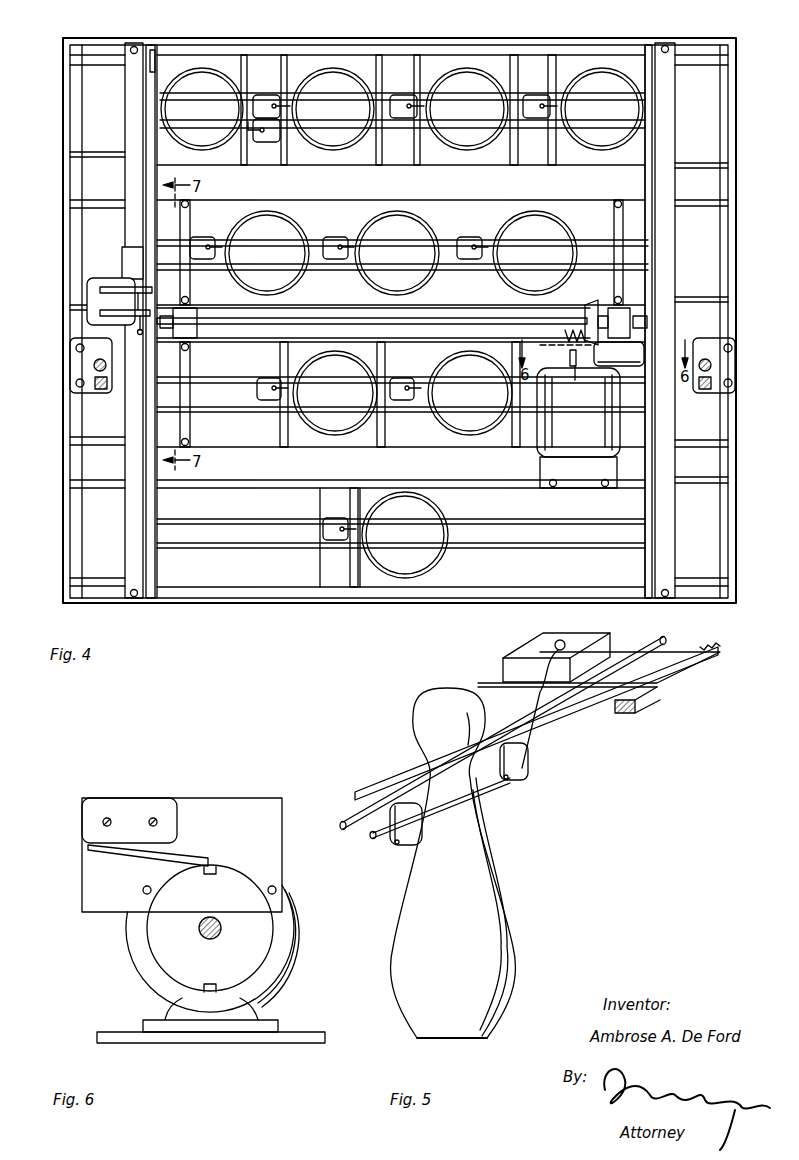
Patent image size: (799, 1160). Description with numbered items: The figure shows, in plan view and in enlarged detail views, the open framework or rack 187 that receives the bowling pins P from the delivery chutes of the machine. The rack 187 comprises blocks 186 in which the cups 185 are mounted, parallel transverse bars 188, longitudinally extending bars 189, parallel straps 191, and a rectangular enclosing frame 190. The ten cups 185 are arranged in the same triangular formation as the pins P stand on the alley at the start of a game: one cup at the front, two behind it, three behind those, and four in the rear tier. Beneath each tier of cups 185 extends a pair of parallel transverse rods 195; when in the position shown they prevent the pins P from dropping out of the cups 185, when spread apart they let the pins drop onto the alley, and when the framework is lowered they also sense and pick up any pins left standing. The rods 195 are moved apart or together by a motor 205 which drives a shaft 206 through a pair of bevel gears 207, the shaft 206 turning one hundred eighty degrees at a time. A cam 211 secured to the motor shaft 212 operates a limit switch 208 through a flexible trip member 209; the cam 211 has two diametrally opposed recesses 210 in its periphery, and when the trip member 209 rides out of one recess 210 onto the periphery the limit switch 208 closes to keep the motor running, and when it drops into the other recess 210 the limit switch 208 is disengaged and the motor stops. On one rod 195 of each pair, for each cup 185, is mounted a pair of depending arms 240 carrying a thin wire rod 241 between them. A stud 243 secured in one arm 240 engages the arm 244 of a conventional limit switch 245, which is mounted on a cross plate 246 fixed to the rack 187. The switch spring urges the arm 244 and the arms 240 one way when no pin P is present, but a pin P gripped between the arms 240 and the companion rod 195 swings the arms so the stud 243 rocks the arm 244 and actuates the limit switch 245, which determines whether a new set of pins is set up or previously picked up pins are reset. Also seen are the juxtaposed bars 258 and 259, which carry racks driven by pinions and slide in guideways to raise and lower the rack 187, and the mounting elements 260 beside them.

In FIG. 4, the cups 185 is at (343, 150).
In FIG. 4, the blocks 186 is at (585, 160).
In FIG. 4, the rack 187 is at (325, 612).
In FIG. 4, the parallel transverse bars 188 is at (242, 348).
In FIG. 5, the parallel transverse bars 188 is at (650, 698).
In FIG. 4, the longitudinally extending bars 189 is at (128, 530).
In FIG. 4, the rectangular enclosing frame 190 is at (70, 540).
In FIG. 4, the parallel straps 191 is at (157, 501).
In FIG. 4, the rods 195 is at (362, 100).
In FIG. 5, the rods 195 is at (345, 832).
In FIG. 4, the motor 205 is at (552, 438).
In FIG. 6, the motor 205 is at (290, 958).
In FIG. 4, the shaft 206 is at (492, 326).
In FIG. 4, the bevel gears 207 is at (585, 330).
In FIG. 4, the limit switch 208 is at (95, 282).
In FIG. 6, the limit switch 208 is at (170, 813).
In FIG. 4, the flexible trip member 209 is at (575, 381).
In FIG. 6, the flexible trip member 209 is at (185, 852).
In FIG. 6, the recesses 210 is at (216, 866).
In FIG. 6, the cam 211 is at (158, 952).
In FIG. 6, the motor shaft 212 is at (220, 936).
In FIG. 5, the depending arms 240 is at (530, 758).
In FIG. 5, the thin wire rod 241 is at (493, 792).
In FIG. 5, the stud 243 is at (530, 697).
In FIG. 5, the limit switch arm 244 is at (555, 642).
In FIG. 4, the limit switch 245 is at (266, 94).
In FIG. 5, the limit switch 245 is at (585, 636).
In FIG. 4, the cross plates 246 is at (393, 445).
In FIG. 5, the cross plates 246 is at (664, 668).
In FIG. 4, the bar 258 is at (94, 365).
In FIG. 4, the bar 259 is at (100, 392).
In FIG. 4, the mounting bolt 260 is at (705, 392).
In FIG. 5, the pins P is at (490, 905).